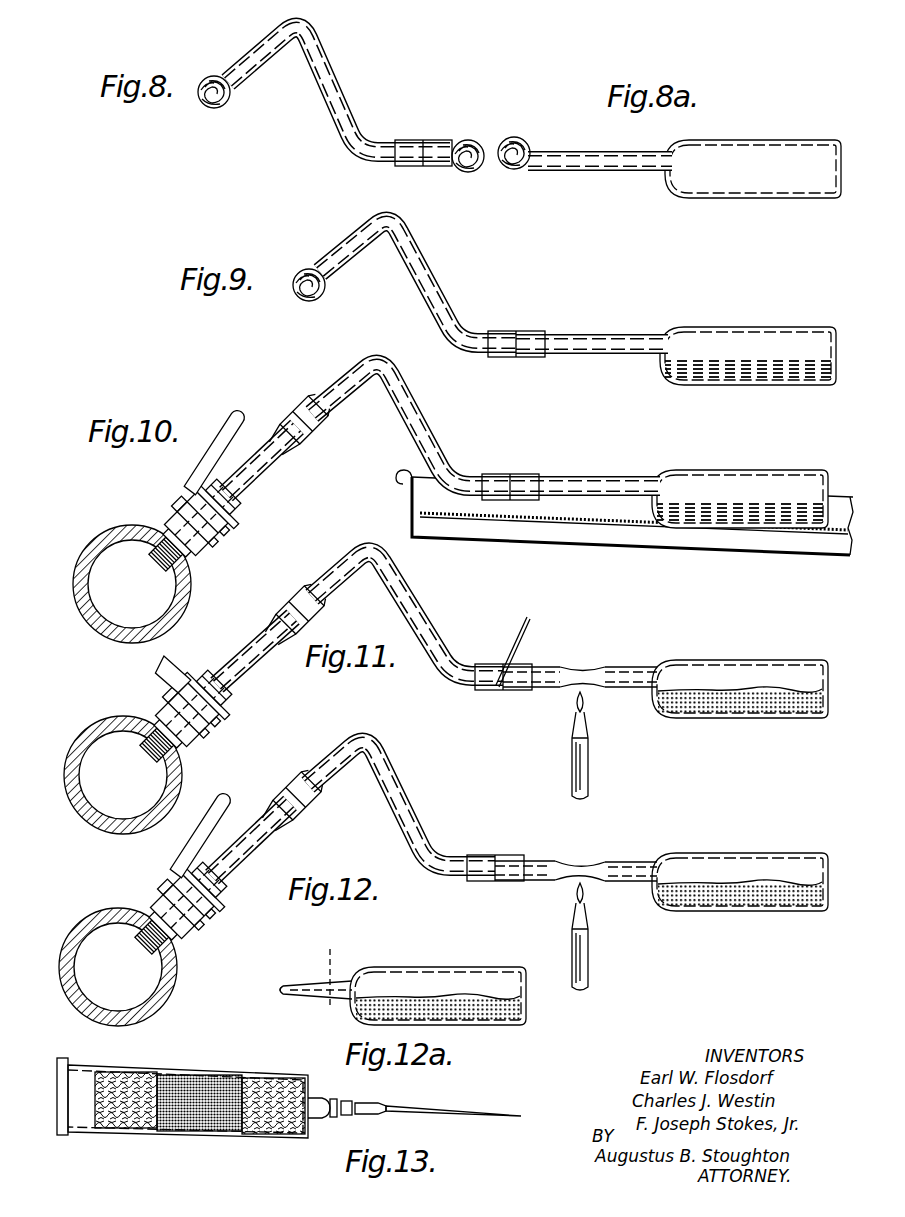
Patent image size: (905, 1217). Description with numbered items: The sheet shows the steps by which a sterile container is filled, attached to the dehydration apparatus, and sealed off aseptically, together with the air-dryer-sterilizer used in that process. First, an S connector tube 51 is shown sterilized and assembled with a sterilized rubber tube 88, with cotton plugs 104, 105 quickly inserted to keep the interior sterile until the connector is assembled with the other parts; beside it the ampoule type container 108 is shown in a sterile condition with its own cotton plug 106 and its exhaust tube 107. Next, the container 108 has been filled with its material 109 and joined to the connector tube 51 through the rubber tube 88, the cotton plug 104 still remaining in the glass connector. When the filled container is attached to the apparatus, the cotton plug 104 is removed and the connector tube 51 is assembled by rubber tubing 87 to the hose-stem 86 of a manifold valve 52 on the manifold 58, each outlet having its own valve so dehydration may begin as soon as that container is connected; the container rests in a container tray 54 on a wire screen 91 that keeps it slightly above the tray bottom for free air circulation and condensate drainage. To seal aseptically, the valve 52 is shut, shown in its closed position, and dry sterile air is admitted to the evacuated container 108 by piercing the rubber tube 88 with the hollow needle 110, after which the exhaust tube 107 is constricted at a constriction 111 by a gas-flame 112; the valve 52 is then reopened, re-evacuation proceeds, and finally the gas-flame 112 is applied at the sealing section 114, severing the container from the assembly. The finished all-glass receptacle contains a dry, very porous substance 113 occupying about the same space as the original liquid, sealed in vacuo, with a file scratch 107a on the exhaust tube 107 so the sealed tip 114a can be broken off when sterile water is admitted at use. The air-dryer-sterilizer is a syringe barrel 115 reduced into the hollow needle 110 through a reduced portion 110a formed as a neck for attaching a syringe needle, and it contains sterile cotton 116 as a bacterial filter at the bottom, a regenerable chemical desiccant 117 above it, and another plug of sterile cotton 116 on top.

In FIG. 8, the S connector tube 51 is at (335, 102).
In FIG. 9, the S connector tube 51 is at (420, 287).
In FIG. 10, the S connector tube 51 is at (410, 420).
In FIG. 11, the S connector tube 51 is at (403, 606).
In FIG. 12, the S connector tube 51 is at (400, 803).
In FIG. 10, the manifold valve 52 is at (168, 498).
In FIG. 11, the manifold valve 52 is at (165, 699).
In FIG. 12, the manifold valve 52 is at (160, 890).
In FIG. 10, the container tray 54 is at (410, 504).
In FIG. 10, the manifold 58 is at (191, 600).
In FIG. 11, the manifold 58 is at (108, 717).
In FIG. 12, the manifold 58 is at (100, 917).
In FIG. 10, the hose-stem 86 is at (262, 483).
In FIG. 11, the hose-stem 86 is at (256, 675).
In FIG. 10, the rubber tubing 87 is at (287, 423).
In FIG. 11, the rubber tubing 87 is at (306, 591).
In FIG. 12, the rubber tubing 87 is at (303, 781).
In FIG. 8, the rubber tube 88 is at (426, 140).
In FIG. 9, the rubber tube 88 is at (506, 332).
In FIG. 10, the rubber tube 88 is at (497, 477).
In FIG. 11, the rubber tube 88 is at (487, 663).
In FIG. 12, the rubber tube 88 is at (486, 856).
In FIG. 10, the wire screen 91 is at (630, 535).
In FIG. 8, the cotton plug 104 is at (215, 108).
In FIG. 9, the cotton plug 104 is at (310, 302).
In FIG. 8, the cotton plug 105 is at (473, 141).
In FIG. 8A, the cotton plug 106 is at (524, 143).
In FIG. 8A, the exhaust tube 107 is at (602, 171).
In FIG. 9, the exhaust tube 107 is at (605, 337).
In FIG. 10, the exhaust tube 107 is at (598, 473).
In FIG. 11, the exhaust tube 107 is at (633, 666).
In FIG. 12, the exhaust tube 107 is at (631, 860).
In FIG. 12A, the exhaust tube 107 is at (340, 966).
In FIG. 12A, the file scratch 107a is at (325, 1001).
In FIG. 8A, the container 108 is at (762, 148).
In FIG. 9, the container 108 is at (722, 330).
In FIG. 10, the container 108 is at (686, 470).
In FIG. 11, the container 108 is at (690, 659).
In FIG. 12, the container 108 is at (690, 848).
In FIG. 12A, the container 108 is at (372, 970).
In FIG. 9, the material 109 is at (742, 378).
In FIG. 10, the material 109 is at (748, 505).
In FIG. 11, the hollow needle 110 is at (508, 641).
In FIG. 13, the hollow needle 110 is at (488, 1121).
In FIG. 13, the reduced portion 110a is at (322, 1105).
In FIG. 11, the constriction 111 is at (584, 670).
In FIG. 11, the gas-flame 112 is at (590, 760).
In FIG. 12, the gas-flame 112 is at (589, 944).
In FIG. 11, the porous substance 113 is at (745, 696).
In FIG. 12, the porous substance 113 is at (742, 890).
In FIG. 12A, the porous substance 113 is at (448, 1002).
In FIG. 12, the sealing section 114 is at (592, 857).
In FIG. 12A, the sealed tip 114a is at (283, 985).
In FIG. 13, the barrel 115 is at (318, 1131).
In FIG. 13, the sterile cotton 116 is at (108, 1121).
In FIG. 13, the chemical desiccant 117 is at (190, 1126).